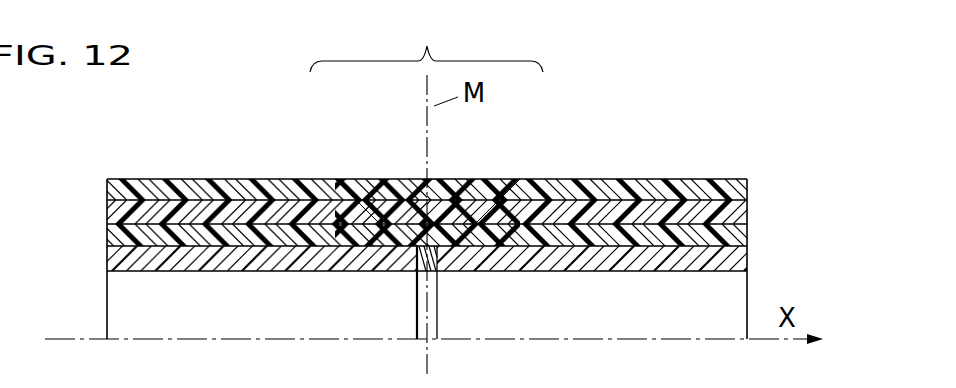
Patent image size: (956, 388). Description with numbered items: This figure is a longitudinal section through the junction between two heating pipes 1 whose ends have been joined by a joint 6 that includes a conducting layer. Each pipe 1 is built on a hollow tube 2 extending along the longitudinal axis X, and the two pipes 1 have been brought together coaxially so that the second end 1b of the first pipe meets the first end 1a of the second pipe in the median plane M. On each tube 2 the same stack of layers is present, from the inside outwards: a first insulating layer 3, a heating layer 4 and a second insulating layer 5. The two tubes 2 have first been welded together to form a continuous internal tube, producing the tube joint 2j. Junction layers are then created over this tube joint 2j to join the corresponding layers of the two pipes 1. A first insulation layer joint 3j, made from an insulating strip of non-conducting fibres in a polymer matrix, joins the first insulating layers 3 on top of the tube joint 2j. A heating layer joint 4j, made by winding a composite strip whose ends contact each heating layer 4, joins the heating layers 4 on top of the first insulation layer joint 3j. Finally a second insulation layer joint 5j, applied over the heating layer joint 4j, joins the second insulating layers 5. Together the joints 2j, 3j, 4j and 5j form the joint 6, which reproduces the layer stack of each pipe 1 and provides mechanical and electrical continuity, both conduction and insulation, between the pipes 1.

The pipe 1 is at (203, 290).
The first end 1a is at (500, 208).
The second end 1b is at (360, 212).
The hollow tube 2 is at (112, 263).
The tube joint 2j is at (416, 286).
The first insulating layer 3 is at (112, 238).
The first insulation layer joint 3j is at (456, 242).
The heating layer 4 is at (112, 212).
The heating layer joint 4j is at (388, 205).
The second insulating layer 5 is at (125, 180).
The second insulation layer joint 5j is at (459, 190).
The joint 6 is at (426, 42).